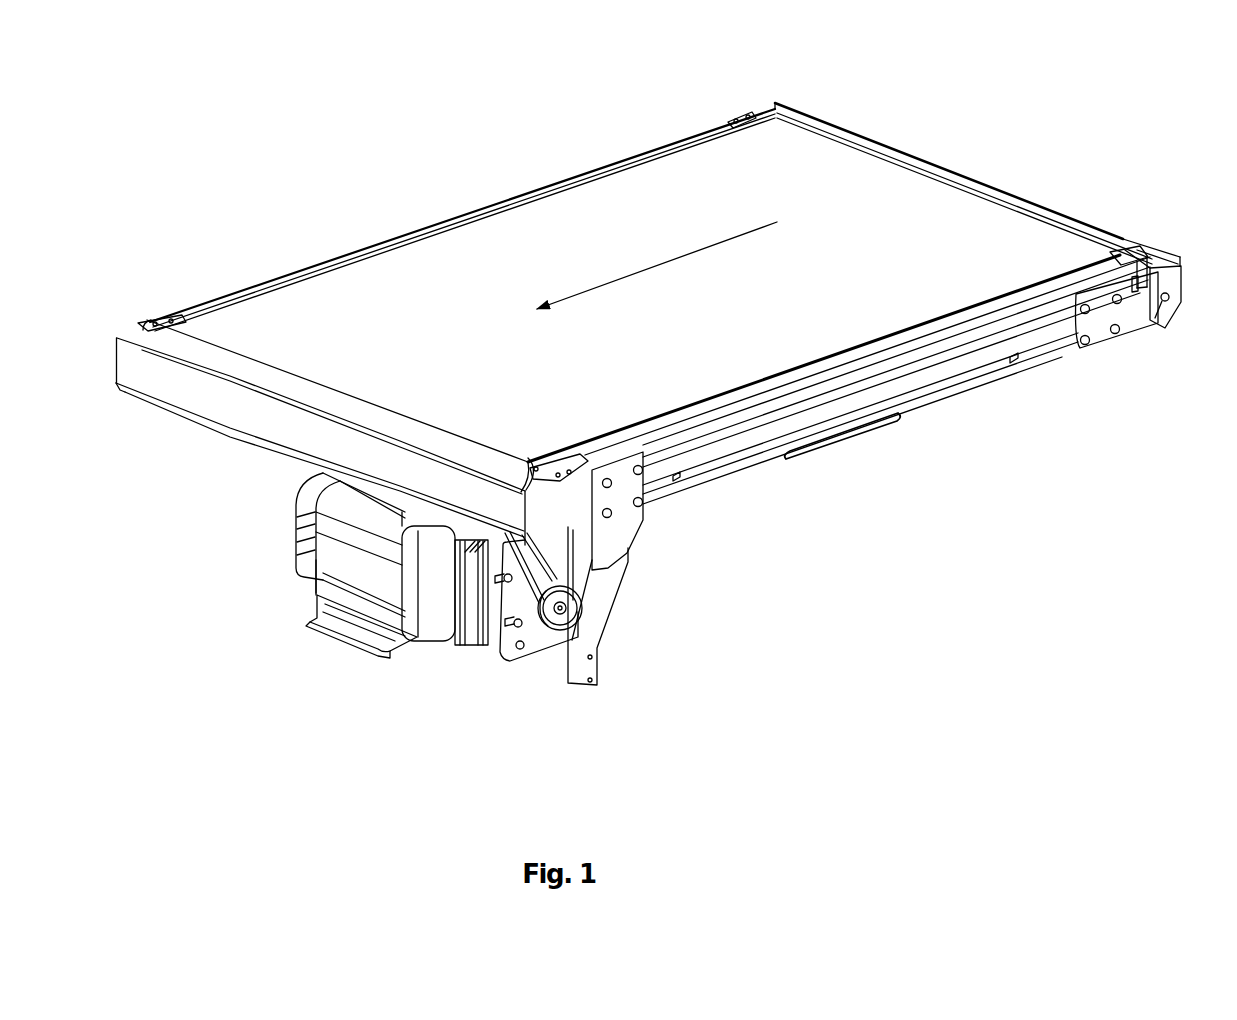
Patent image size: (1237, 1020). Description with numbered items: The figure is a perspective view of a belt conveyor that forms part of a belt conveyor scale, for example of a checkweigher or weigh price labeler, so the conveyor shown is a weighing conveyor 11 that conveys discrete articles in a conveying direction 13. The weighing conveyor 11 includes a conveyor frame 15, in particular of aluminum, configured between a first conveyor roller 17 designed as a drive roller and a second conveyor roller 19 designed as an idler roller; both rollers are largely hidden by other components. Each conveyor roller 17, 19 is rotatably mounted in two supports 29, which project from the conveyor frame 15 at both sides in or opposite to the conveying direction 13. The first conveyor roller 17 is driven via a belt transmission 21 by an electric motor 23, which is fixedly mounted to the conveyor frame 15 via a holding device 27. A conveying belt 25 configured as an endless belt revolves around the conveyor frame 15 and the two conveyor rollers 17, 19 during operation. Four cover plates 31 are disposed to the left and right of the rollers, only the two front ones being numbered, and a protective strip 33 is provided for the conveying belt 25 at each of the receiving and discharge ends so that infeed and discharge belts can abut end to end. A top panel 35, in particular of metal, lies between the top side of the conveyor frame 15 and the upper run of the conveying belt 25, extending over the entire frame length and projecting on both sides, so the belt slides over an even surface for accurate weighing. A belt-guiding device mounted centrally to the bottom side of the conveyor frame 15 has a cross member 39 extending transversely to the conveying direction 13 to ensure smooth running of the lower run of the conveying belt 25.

The weighing conveyor 11 is at (310, 122).
The conveying direction 13 is at (675, 260).
The conveyor frame 15 is at (972, 362).
The first conveyor roller 17 is at (503, 450).
The second conveyor roller 19 is at (1150, 244).
The belt transmission 21 is at (513, 596).
The electric motor 23 is at (305, 550).
The conveying belt 25 is at (823, 178).
The holding device 27 is at (645, 602).
The supports 29 is at (690, 125).
The cover plates 31 is at (1125, 245).
The protective strip 33 is at (925, 155).
The top panel 35 is at (703, 410).
The cross member 39 is at (845, 443).